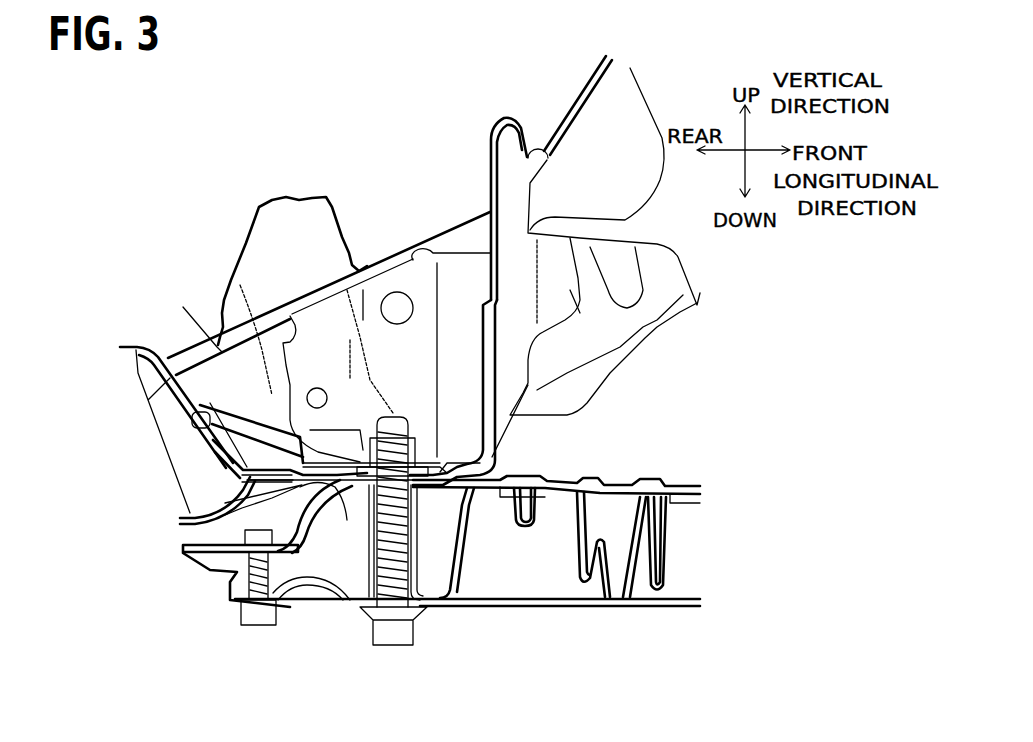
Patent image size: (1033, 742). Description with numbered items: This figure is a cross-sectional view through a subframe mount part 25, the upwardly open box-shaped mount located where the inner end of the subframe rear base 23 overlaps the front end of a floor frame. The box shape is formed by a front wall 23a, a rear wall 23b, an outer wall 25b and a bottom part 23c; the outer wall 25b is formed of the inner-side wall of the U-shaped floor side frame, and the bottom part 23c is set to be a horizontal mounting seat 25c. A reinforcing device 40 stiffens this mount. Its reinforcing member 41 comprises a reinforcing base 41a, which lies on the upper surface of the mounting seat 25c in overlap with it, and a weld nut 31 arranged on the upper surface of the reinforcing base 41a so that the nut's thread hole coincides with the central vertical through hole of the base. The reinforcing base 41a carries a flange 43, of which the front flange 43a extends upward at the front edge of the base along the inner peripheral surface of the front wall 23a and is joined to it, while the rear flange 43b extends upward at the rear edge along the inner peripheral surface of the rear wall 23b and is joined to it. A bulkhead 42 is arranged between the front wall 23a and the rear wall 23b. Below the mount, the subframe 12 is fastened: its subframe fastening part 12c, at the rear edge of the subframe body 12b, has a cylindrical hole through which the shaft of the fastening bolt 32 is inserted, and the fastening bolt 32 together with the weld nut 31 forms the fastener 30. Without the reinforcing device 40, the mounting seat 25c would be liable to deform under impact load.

The subframe 12 is at (570, 543).
The subframe body 12b is at (677, 486).
The subframe fastening part 12c is at (463, 609).
The subframe rear base 23 is at (596, 262).
The front wall 23a is at (513, 177).
The rear wall 23b is at (173, 390).
The bottom part 23c is at (524, 507).
The subframe mount part 25 is at (295, 166).
The outer wall 25b is at (183, 307).
The mounting seat 25c is at (492, 495).
The fastener 30 is at (294, 293).
The weld nut 31 is at (245, 292).
The fastening bolt 32 is at (350, 297).
The reinforcing device 40 is at (348, 471).
The reinforcing member 41 is at (203, 550).
The reinforcing base 41a is at (245, 475).
The bulkhead 42 is at (427, 273).
The flange 43 is at (386, 445).
The front flange 43a is at (503, 407).
The rear flange 43b is at (253, 453).